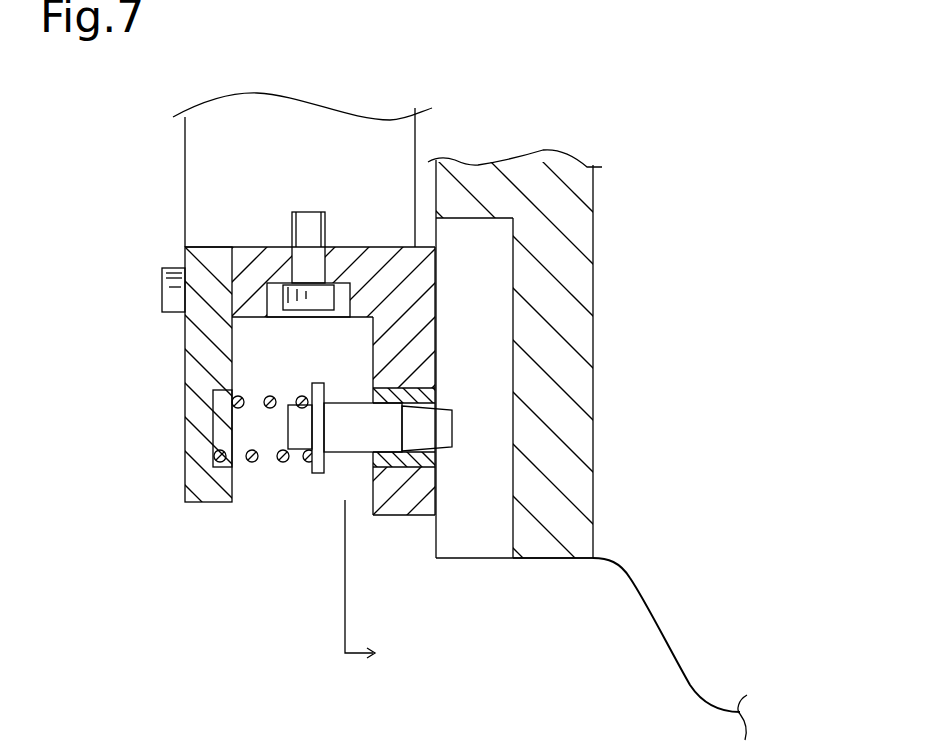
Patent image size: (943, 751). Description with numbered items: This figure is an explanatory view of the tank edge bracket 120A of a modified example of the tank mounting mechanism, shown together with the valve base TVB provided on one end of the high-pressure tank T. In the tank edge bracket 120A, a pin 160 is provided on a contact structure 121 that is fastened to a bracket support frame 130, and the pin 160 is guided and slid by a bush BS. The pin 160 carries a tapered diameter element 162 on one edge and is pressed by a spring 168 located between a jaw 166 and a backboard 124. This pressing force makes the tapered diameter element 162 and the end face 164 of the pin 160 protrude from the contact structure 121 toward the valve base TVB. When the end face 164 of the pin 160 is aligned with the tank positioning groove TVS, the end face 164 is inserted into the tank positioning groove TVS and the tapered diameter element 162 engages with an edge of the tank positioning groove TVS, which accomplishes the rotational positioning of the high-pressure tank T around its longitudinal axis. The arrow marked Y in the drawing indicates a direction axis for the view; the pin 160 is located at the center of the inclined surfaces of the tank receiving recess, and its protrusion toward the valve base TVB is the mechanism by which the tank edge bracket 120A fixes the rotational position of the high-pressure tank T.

The bracket support frame 130 is at (193, 180).
The backboard 124 is at (200, 353).
The contact structure 121 is at (436, 275).
The pin 160 is at (377, 418).
The tapered diameter element 162 is at (437, 405).
The end face 164 is at (452, 428).
The spring 168 is at (250, 462).
The jaw 166 is at (317, 477).
The bush BS is at (378, 461).
The tank edge bracket 120A is at (390, 507).
The tank positioning groove TVS is at (480, 550).
The valve base TVB is at (552, 550).
The high-pressure tank T is at (697, 680).
The Y axis Y is at (373, 583).